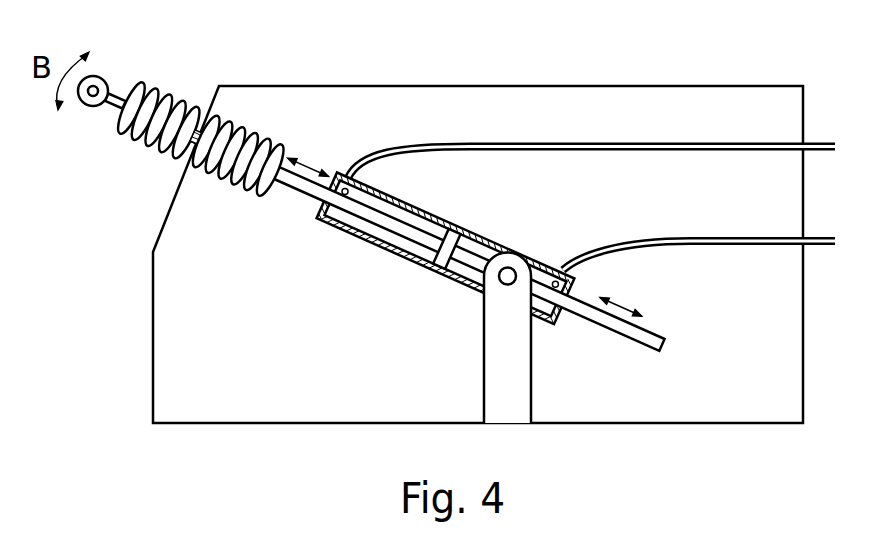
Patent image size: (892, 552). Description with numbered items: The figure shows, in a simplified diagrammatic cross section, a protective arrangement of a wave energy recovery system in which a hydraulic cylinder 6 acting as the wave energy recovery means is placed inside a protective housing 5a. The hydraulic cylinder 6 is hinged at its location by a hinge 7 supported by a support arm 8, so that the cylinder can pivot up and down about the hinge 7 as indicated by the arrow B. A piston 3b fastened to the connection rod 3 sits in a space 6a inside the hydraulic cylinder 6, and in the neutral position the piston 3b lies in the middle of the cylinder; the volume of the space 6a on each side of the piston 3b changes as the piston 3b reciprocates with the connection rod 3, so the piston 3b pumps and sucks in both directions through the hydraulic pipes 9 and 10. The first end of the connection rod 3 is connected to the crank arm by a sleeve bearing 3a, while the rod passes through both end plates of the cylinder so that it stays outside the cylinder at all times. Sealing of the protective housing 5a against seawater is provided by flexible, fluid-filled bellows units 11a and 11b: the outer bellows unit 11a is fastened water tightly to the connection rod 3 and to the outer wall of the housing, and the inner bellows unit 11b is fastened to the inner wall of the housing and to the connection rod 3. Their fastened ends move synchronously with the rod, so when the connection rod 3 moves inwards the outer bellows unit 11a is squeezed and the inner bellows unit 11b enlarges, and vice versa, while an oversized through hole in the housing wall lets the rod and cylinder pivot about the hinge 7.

The connection rod 3 is at (296, 182).
The sleeve bearing 3a is at (88, 108).
The piston 3b is at (441, 273).
The protective housing 5a is at (743, 104).
The hydraulic cylinder 6 is at (391, 195).
The space 6a is at (347, 220).
The hinge 7 is at (515, 267).
The support arm 8 is at (529, 395).
The hydraulic pipe 9 is at (683, 148).
The hydraulic pipe 10 is at (785, 245).
The outer bellows unit 11a is at (176, 89).
The inner bellows unit 11b is at (228, 189).